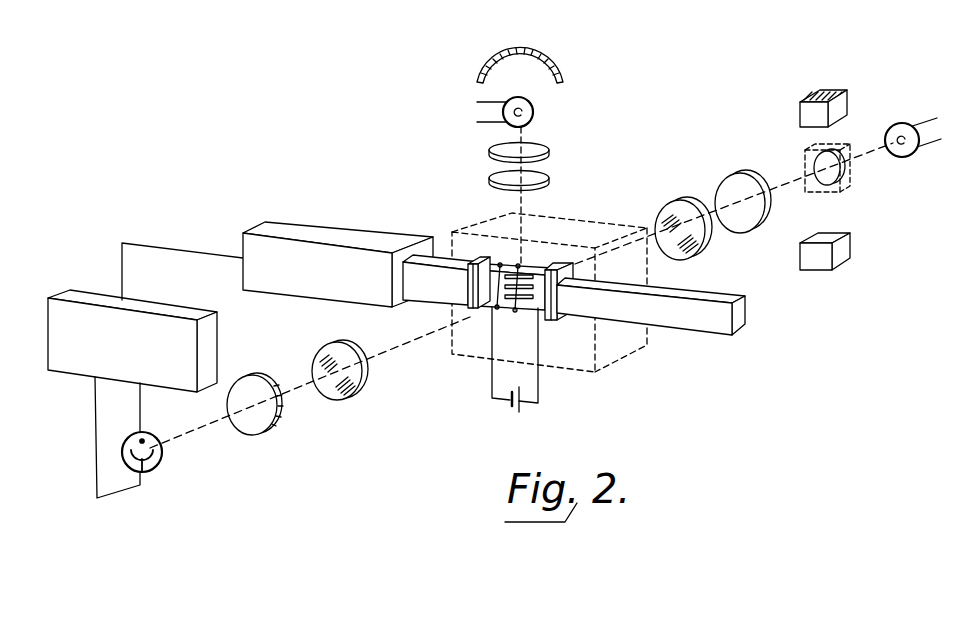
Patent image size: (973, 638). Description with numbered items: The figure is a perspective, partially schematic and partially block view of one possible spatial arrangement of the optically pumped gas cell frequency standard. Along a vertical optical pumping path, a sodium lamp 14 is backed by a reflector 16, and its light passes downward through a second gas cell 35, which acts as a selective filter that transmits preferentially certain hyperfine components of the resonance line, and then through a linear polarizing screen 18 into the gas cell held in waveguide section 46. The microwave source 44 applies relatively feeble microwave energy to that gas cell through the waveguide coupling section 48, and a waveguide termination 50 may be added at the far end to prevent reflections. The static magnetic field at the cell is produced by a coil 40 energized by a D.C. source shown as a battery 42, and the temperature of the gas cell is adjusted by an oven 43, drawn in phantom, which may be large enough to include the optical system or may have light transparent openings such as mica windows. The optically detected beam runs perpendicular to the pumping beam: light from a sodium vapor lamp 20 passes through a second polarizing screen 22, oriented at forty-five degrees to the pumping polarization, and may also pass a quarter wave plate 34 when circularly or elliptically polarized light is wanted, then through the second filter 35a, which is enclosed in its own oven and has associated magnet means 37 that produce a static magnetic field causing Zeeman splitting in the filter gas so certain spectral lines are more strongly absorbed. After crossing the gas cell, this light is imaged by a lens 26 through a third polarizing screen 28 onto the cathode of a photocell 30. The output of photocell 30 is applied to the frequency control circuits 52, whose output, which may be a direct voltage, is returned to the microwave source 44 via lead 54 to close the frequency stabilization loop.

The sodium lamp 14 is at (533, 112).
The reflector 16 is at (558, 46).
The linear polarizing screen 18 is at (548, 177).
The sodium vapor lamp 20 is at (919, 146).
The second polarizing screen 22 is at (735, 176).
The lens 26 is at (345, 336).
The third polarizing screen 28 is at (260, 367).
The photocell 30 is at (162, 459).
The quarter wave plate 34 is at (684, 184).
The second gas cell 35 is at (548, 148).
The second filter 35a is at (850, 171).
The means for producing a static magnetic field 37 is at (847, 100).
The coil 40 is at (541, 258).
The battery 42 is at (519, 412).
The oven 43 is at (595, 372).
The microwave source 44 is at (290, 222).
The waveguide section 46 is at (528, 306).
The waveguide coupling section 48 is at (437, 258).
The waveguide termination 50 is at (705, 293).
The frequency control circuits 52 is at (215, 338).
The lead 54 is at (207, 252).